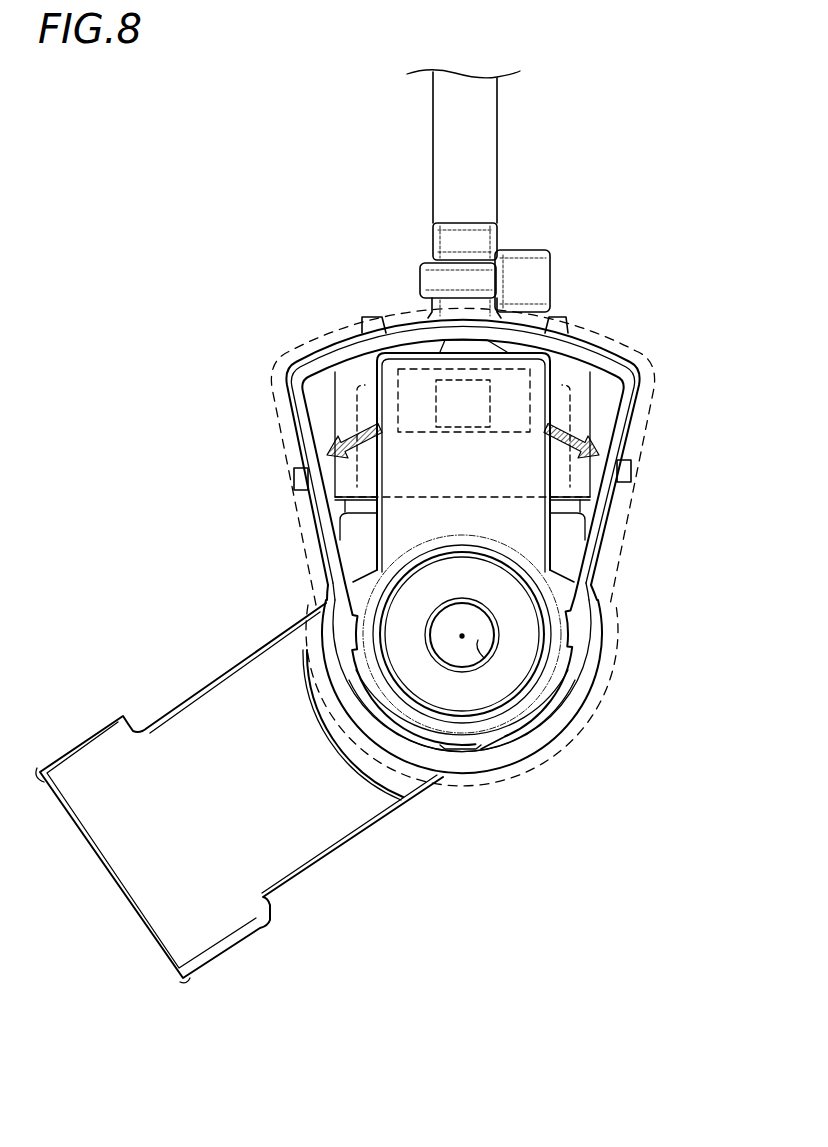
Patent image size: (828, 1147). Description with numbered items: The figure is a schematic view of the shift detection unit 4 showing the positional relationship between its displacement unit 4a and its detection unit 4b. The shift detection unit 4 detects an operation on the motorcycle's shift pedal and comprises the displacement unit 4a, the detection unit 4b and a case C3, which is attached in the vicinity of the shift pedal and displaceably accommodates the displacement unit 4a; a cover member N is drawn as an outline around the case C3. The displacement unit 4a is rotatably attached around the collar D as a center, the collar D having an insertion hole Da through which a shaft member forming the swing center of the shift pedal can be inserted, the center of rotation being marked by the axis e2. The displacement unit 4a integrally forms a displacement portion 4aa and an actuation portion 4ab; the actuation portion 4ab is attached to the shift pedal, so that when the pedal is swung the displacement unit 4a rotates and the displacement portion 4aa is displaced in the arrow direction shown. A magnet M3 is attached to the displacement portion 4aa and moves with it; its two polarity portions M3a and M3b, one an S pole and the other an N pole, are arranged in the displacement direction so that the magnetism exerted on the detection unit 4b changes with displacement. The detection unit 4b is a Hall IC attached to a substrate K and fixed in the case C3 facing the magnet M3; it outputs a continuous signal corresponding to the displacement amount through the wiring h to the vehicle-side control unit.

The shift detection unit 4 is at (198, 280).
The wiring h is at (490, 122).
The portion of the magnet M3b is at (415, 392).
The portion of the magnet M3a is at (512, 388).
The cover member N is at (268, 405).
The detection unit 4b is at (452, 433).
The magnet M3 is at (502, 442).
The substrate K is at (638, 487).
The displacement portion 4aa is at (395, 542).
The case C3 is at (597, 518).
The axis e2 is at (462, 636).
The collar D is at (530, 603).
The insertion hole Da is at (478, 640).
The displacement unit 4a is at (562, 690).
The actuation portion 4ab is at (195, 718).